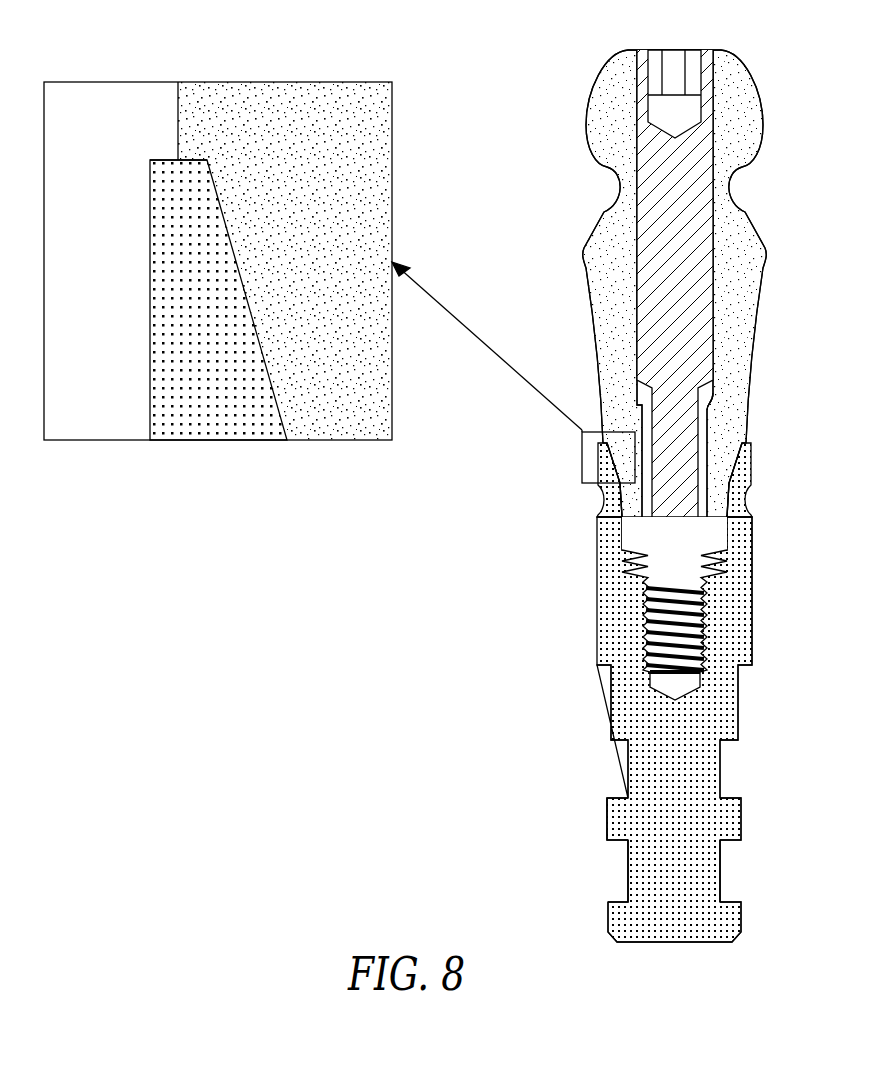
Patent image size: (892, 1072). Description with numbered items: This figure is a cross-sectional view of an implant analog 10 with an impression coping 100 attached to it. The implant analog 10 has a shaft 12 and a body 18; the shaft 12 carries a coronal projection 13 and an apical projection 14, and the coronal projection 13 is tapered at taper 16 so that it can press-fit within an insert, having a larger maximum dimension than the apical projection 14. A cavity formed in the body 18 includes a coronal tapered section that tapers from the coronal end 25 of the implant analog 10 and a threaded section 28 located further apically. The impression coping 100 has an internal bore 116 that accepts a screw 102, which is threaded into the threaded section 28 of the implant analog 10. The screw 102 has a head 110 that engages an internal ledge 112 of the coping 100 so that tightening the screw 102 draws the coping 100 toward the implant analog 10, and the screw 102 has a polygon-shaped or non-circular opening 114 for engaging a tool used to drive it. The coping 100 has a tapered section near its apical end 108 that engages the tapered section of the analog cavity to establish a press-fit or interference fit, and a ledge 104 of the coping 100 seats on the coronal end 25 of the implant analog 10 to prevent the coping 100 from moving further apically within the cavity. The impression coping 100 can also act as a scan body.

The implant analog 10 is at (491, 476).
The shaft 12 is at (703, 875).
The coronal projection 13 is at (628, 832).
The apical projection 14 is at (625, 920).
The taper 16 is at (675, 819).
The body 18 is at (680, 729).
The coronal end 25 is at (163, 158).
The threaded section 28 is at (672, 645).
The impression coping 100 is at (696, 300).
The screw 102 is at (690, 165).
The ledge 104 is at (196, 164).
The apical end 108 is at (722, 566).
The head 110 is at (491, 305).
The internal ledge 112 is at (707, 396).
The polygon-shaped opening 114 is at (692, 63).
The internal bore 116 is at (640, 135).